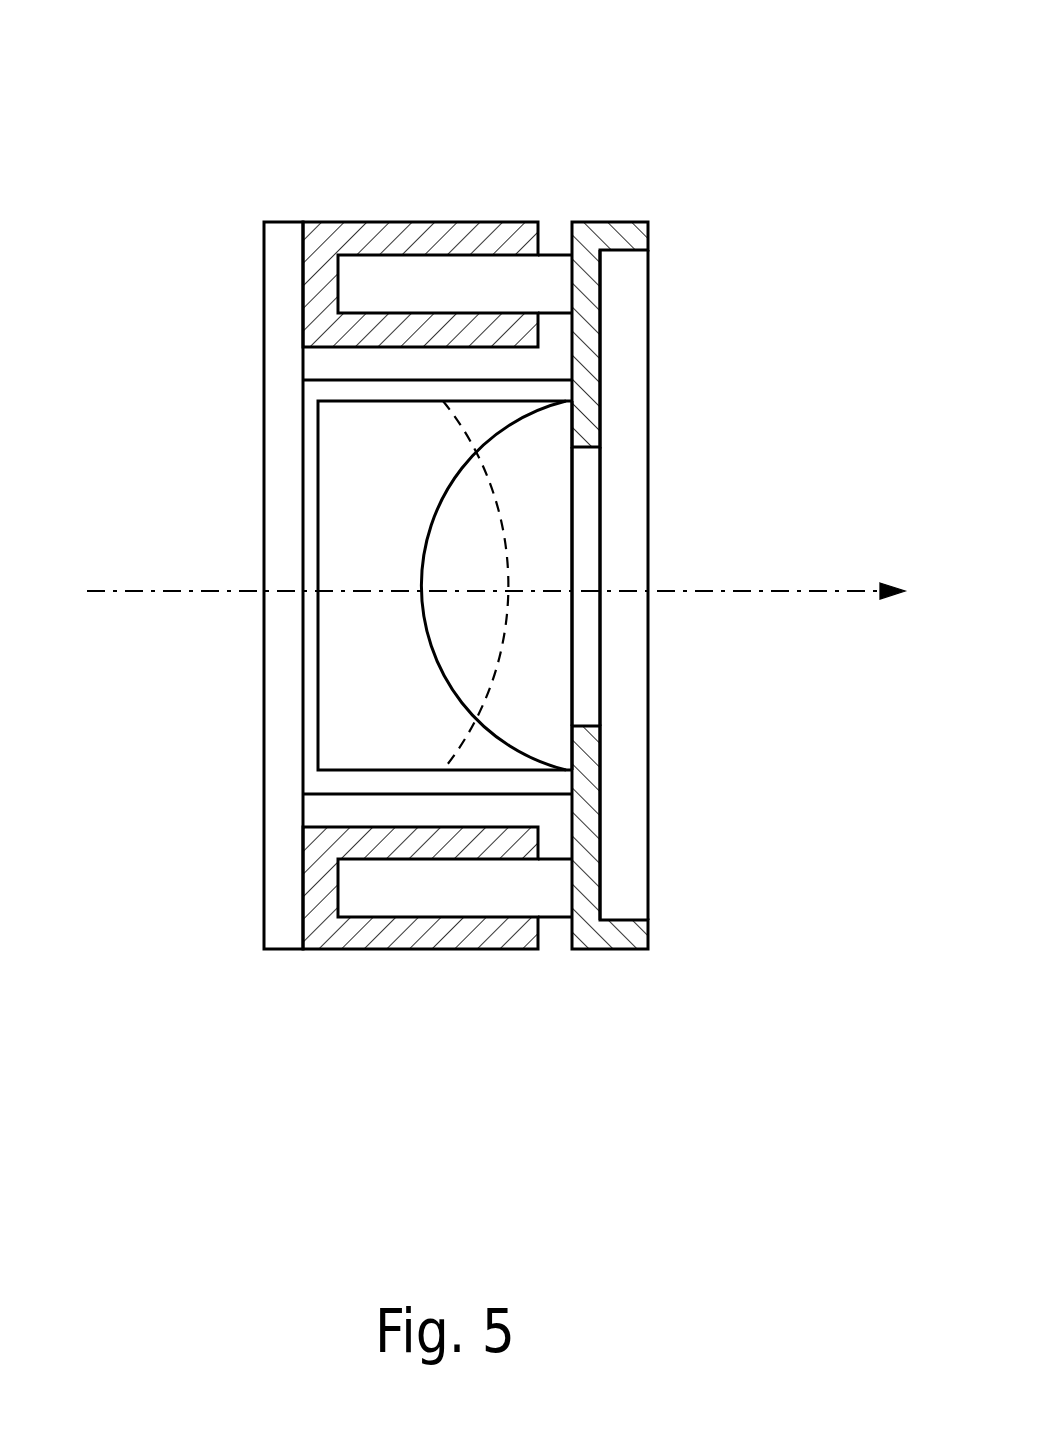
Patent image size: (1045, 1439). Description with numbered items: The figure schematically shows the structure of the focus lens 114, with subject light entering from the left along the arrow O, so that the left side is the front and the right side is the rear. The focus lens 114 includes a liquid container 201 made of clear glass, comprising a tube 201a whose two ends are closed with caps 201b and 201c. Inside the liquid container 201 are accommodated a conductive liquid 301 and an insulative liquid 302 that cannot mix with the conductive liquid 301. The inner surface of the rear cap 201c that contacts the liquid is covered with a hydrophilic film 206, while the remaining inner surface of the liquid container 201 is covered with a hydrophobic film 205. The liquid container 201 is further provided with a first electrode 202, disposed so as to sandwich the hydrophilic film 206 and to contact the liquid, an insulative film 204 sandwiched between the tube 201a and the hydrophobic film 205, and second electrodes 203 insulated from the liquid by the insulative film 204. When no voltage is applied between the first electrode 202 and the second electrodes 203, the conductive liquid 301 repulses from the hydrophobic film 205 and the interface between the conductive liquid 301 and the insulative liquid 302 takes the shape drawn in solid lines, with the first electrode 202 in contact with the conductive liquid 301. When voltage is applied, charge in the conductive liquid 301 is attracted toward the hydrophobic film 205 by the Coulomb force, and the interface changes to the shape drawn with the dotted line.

The focus lens 114 is at (642, 118).
The liquid container 201 is at (667, 1057).
The tube 201a is at (453, 893).
The cap 201b is at (285, 910).
The cap 201c is at (632, 895).
The first electrode 202 is at (628, 230).
The second electrodes 203 is at (330, 233).
The insulative film 204 is at (550, 345).
The hydrophobic film 205 is at (547, 392).
The hydrophilic film 206 is at (588, 630).
The conductive liquid 301 is at (540, 685).
The insulative liquid 302 is at (365, 742).